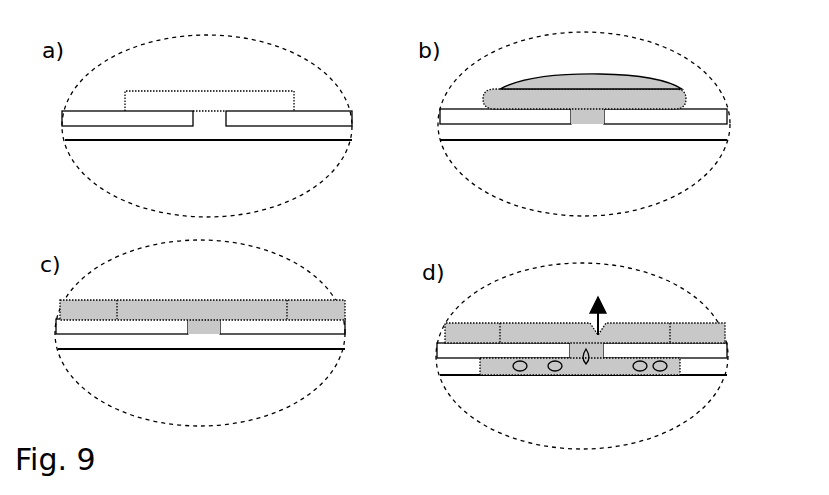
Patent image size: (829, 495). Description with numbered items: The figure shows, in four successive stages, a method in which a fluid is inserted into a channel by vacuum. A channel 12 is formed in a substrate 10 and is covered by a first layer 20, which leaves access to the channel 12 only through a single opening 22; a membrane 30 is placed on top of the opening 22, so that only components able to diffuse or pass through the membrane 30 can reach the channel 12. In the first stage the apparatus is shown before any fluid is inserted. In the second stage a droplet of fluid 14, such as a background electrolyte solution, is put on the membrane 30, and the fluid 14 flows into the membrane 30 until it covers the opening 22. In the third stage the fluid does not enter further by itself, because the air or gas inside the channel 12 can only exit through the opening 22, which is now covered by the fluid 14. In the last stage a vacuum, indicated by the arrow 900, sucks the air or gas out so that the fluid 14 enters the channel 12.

The substrate 10 is at (392, 240).
The channel 12 is at (335, 139).
The fluid 14 is at (608, 72).
The first layer 20 is at (335, 114).
The opening 22 is at (208, 126).
The membrane 30 is at (277, 102).
The arrow 900 is at (605, 305).